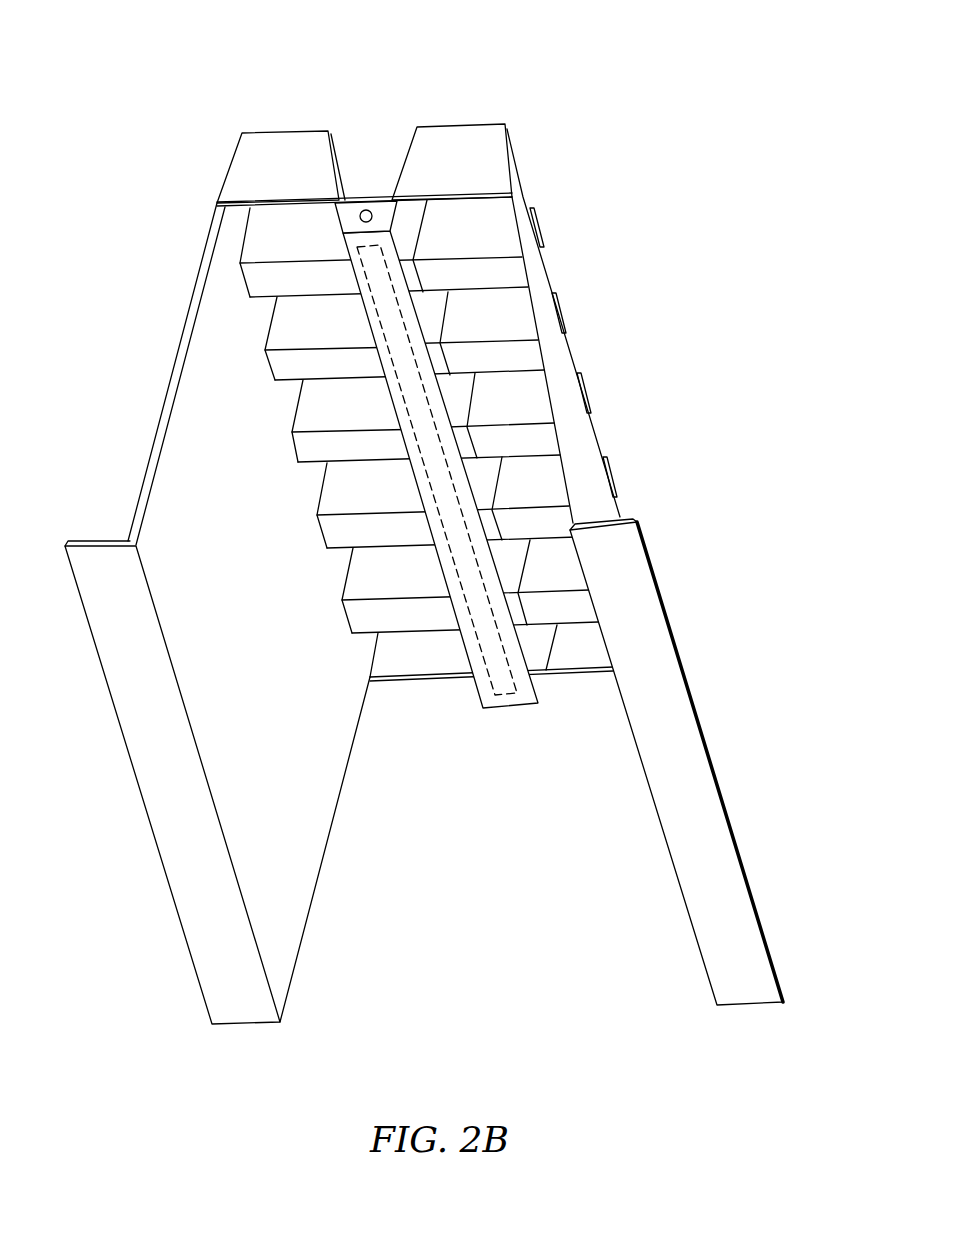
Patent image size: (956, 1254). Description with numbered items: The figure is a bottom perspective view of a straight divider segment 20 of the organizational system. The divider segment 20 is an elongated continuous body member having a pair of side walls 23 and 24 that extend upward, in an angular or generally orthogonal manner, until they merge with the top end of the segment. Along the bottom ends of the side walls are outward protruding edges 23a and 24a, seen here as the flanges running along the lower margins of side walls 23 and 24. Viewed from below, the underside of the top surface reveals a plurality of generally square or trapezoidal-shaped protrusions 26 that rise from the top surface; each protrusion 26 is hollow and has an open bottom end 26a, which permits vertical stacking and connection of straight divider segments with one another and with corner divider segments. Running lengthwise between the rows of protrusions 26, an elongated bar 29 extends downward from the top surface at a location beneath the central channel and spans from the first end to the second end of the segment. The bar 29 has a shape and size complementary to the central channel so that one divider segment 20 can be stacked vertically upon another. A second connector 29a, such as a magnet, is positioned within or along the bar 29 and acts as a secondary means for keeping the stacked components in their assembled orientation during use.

The divider segment 20 is at (172, 86).
The side wall 23 is at (646, 834).
The outward protruding edge 23a is at (717, 843).
The side wall 24 is at (262, 650).
The outward protruding edge 24a is at (178, 805).
The protrusion 26 is at (279, 132).
The open bottom end 26a is at (298, 313).
The elongated bar 29 is at (382, 215).
The second connector 29a is at (488, 662).